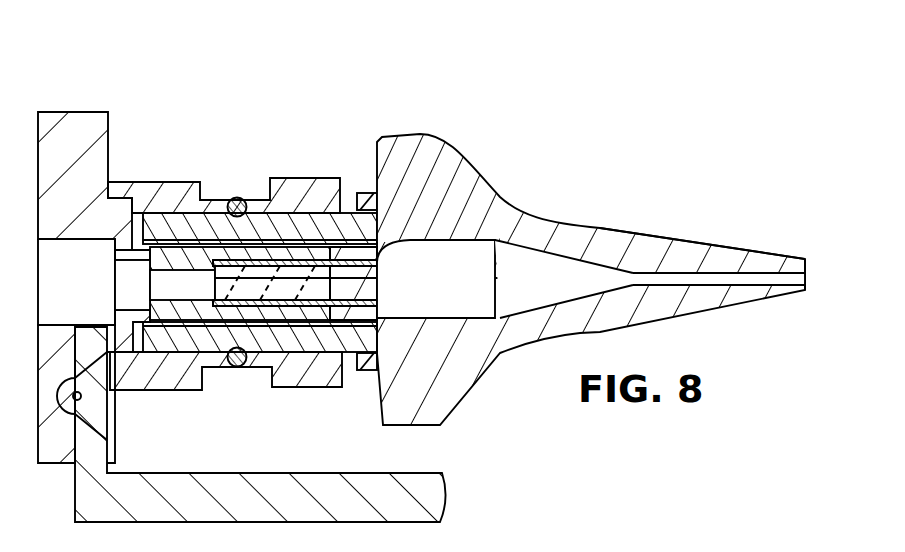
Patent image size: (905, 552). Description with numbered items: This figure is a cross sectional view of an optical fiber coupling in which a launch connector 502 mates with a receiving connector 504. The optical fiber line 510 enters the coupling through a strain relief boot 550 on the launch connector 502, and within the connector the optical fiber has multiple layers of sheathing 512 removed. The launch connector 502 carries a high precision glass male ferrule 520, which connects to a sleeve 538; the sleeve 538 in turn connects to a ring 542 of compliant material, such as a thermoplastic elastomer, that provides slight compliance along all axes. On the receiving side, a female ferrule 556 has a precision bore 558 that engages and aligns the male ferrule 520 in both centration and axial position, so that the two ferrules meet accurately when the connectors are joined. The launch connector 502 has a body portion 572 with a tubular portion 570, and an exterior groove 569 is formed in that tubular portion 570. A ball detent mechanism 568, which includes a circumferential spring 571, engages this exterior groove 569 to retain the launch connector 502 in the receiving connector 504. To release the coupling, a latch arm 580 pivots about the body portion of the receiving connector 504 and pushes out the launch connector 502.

The launch connector 502 is at (548, 220).
The receiving connector 504 is at (68, 112).
The optical fiber line 510 is at (483, 205).
The sheathing 512 is at (650, 272).
The male ferrule 520 is at (297, 230).
The sleeve 538 is at (437, 247).
The ring 542 is at (372, 313).
The strain relief boot 550 is at (630, 247).
The female ferrule 556 is at (237, 366).
The precision bore 558 is at (165, 292).
The ball detent mechanism 568 is at (243, 200).
The exterior groove 569 is at (243, 353).
The tubular portion 570 is at (182, 236).
The circumferential spring 571 is at (212, 207).
The body portion 572 is at (372, 300).
The latch arm 580 is at (372, 489).